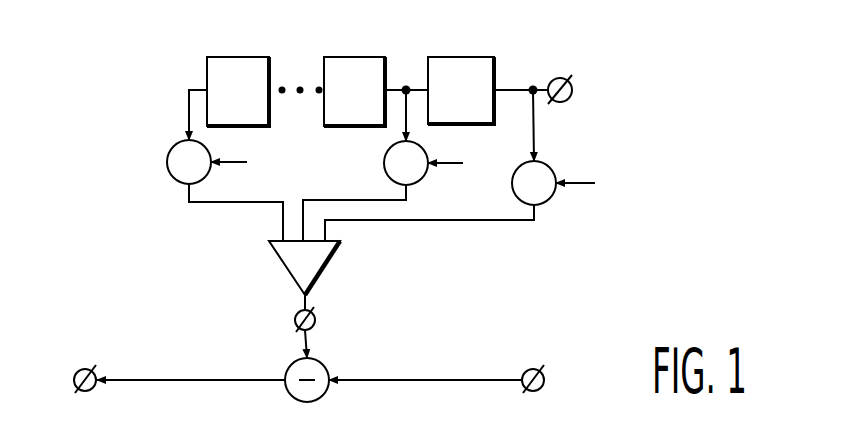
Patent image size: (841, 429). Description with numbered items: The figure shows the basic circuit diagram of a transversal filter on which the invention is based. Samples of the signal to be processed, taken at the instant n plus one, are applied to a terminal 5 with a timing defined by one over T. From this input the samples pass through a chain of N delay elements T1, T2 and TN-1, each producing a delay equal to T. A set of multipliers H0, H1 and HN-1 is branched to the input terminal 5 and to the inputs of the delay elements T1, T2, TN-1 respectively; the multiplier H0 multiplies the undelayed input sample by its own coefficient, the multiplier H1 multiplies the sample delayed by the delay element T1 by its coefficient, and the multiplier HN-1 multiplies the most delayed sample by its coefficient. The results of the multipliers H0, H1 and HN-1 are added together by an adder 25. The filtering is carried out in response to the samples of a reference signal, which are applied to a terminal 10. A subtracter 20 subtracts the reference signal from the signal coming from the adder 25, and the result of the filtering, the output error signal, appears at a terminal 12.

The terminal 5 is at (557, 70).
The terminal 10 is at (528, 368).
The terminal 12 is at (82, 369).
The subtracter 20 is at (325, 362).
The adder 25 is at (331, 262).
The delay element T1 is at (455, 57).
The delay element T2 is at (336, 57).
The delay element TN-1 is at (222, 57).
The multiplier H0 is at (552, 205).
The multiplier H1 is at (423, 178).
The multiplier HN-1 is at (167, 162).